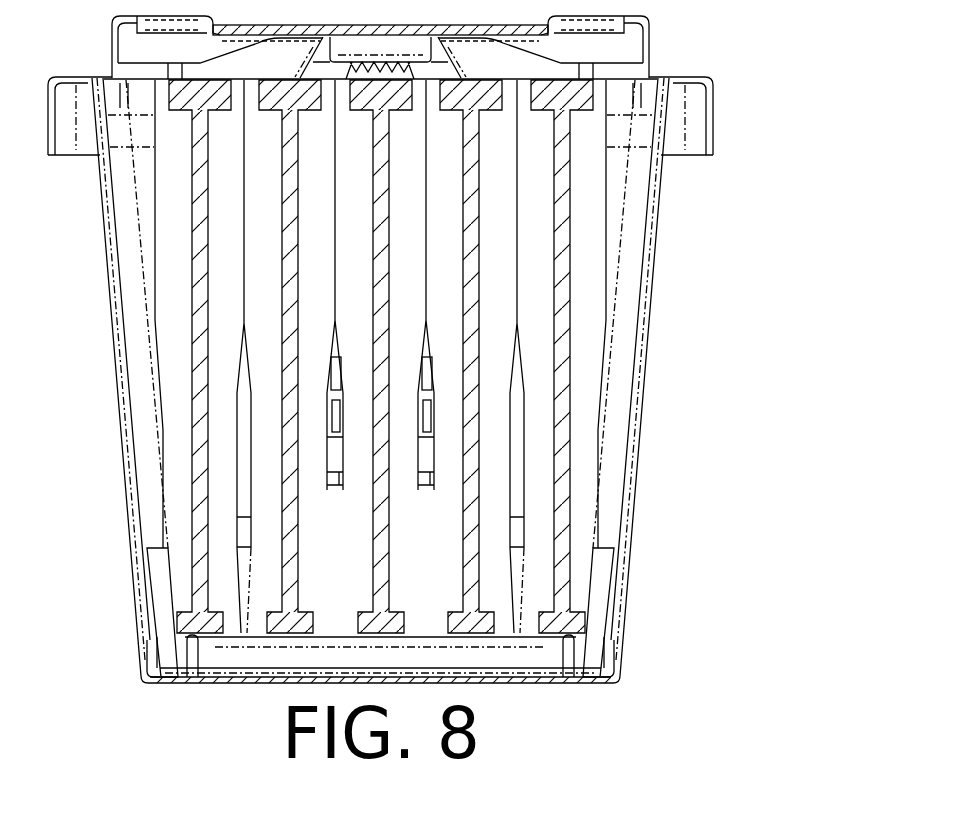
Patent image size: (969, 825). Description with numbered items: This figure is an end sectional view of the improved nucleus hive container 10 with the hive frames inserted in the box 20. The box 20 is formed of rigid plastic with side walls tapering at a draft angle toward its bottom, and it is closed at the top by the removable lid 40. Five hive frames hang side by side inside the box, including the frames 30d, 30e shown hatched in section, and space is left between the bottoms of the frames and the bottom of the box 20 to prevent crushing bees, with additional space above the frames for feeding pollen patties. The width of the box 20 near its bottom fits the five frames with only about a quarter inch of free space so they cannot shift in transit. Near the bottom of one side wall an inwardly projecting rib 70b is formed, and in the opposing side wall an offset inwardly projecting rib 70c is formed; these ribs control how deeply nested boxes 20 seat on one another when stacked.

The nucleus hive container 10 is at (697, 58).
The box 20 is at (650, 288).
The lid 40 is at (707, 85).
The hive frame 30d is at (476, 193).
The hive frame 30e is at (563, 248).
The inwardly projecting rib 70b is at (602, 582).
The inwardly projecting rib 70c is at (150, 590).